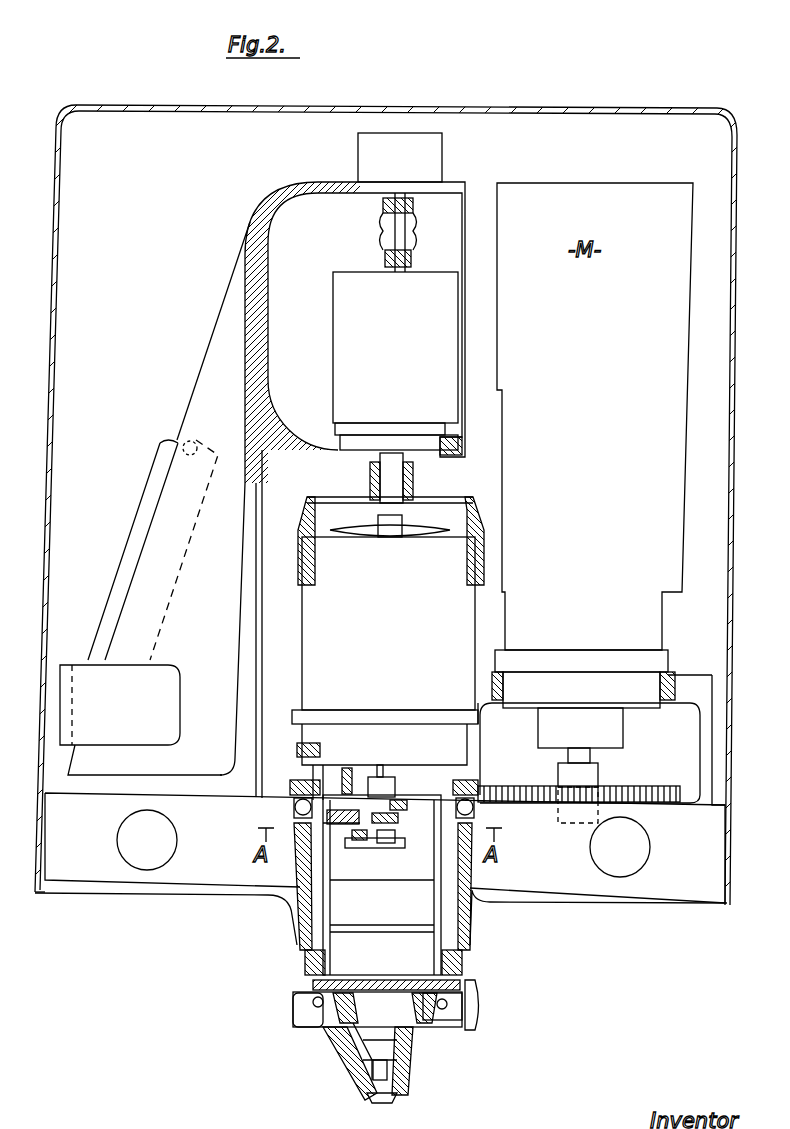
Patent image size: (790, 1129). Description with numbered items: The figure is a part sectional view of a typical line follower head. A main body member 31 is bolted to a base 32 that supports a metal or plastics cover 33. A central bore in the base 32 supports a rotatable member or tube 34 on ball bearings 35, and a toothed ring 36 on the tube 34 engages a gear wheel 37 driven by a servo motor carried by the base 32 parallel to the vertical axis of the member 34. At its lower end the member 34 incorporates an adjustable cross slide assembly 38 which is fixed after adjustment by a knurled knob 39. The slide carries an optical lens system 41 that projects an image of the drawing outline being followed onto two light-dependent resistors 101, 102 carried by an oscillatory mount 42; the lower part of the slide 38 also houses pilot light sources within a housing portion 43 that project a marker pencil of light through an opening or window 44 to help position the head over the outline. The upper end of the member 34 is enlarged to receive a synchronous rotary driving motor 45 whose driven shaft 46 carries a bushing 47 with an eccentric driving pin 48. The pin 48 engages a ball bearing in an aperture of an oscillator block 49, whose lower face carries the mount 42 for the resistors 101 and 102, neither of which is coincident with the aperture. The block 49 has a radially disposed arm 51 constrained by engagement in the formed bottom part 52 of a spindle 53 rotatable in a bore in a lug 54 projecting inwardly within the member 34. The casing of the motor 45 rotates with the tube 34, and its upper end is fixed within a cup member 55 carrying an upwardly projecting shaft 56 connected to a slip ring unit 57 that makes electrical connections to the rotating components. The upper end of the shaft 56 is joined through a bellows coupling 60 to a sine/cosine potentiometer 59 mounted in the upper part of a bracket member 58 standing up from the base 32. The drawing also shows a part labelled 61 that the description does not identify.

The main body member 31 is at (222, 782).
The base 32 is at (52, 864).
The cover 33 is at (50, 420).
The rotatable member or tube 34 is at (330, 912).
The ball bearings 35 is at (305, 962).
The toothed ring 36 is at (288, 778).
The gear wheel 37 is at (548, 790).
The adjustable cross slide assembly 38 is at (418, 1022).
The knurled knob 39 is at (476, 992).
The optical lens system 41 is at (404, 1060).
The oscillatory mount 42 is at (405, 848).
The housing portion 43 is at (343, 1036).
The opening or window 44 is at (367, 1096).
The rotary driving motor 45 is at (315, 576).
The driven shaft 46 is at (392, 768).
The bushing 47 is at (396, 803).
The eccentric driving pin 48 is at (398, 818).
The oscillator block 49 is at (345, 810).
The radially disposed arm 51 is at (296, 830).
The formed bottom part 52 is at (290, 806).
The spindle 53 is at (330, 766).
The lug 54 is at (348, 768).
The cup member 55 is at (478, 520).
The upwardly projecting shaft 56 is at (413, 480).
The slip ring unit 57 is at (395, 361).
The bracket member 58 is at (268, 262).
The sine/cosine potentiometer 59 is at (415, 152).
The bellows coupling 60 is at (415, 218).
The pin 61 is at (462, 1020).
The light-dependent resistor 101 is at (388, 843).
The light-dependent resistor 102 is at (360, 840).